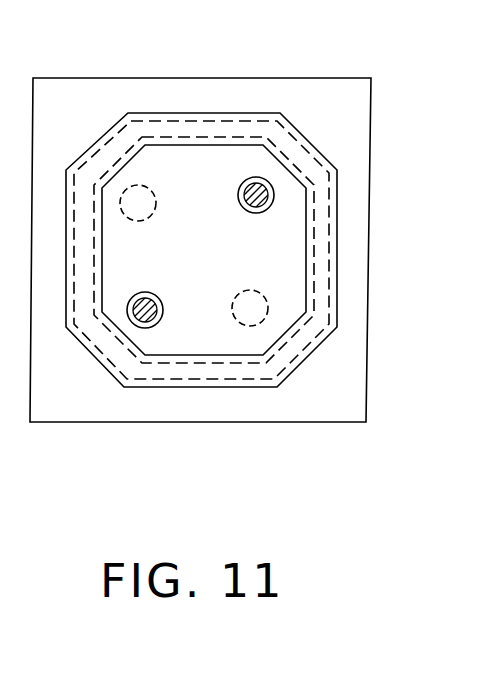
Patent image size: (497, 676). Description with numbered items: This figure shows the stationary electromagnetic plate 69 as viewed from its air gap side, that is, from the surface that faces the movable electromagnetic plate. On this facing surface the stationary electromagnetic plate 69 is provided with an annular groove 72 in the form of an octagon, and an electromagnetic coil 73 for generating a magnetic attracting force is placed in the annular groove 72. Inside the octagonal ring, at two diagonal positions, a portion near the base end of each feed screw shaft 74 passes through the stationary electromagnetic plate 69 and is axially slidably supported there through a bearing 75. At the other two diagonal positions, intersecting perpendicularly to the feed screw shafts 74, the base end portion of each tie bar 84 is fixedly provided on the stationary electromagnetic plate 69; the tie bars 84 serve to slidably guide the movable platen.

The stationary electromagnetic plate 69 is at (371, 133).
The annular groove 72 is at (172, 116).
The electromagnetic coil 73 is at (247, 118).
The feed screw shaft 74 is at (249, 188).
The bearing 75 is at (258, 215).
The tie bar 84 is at (157, 208).